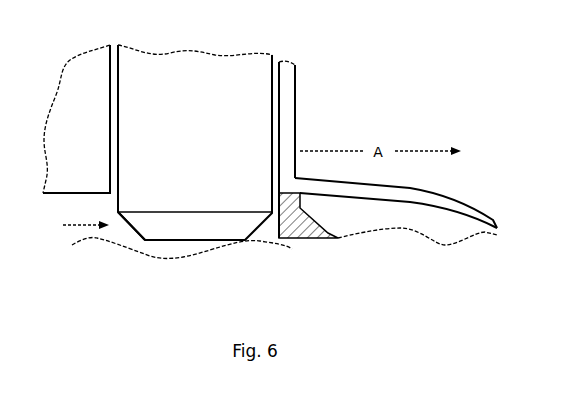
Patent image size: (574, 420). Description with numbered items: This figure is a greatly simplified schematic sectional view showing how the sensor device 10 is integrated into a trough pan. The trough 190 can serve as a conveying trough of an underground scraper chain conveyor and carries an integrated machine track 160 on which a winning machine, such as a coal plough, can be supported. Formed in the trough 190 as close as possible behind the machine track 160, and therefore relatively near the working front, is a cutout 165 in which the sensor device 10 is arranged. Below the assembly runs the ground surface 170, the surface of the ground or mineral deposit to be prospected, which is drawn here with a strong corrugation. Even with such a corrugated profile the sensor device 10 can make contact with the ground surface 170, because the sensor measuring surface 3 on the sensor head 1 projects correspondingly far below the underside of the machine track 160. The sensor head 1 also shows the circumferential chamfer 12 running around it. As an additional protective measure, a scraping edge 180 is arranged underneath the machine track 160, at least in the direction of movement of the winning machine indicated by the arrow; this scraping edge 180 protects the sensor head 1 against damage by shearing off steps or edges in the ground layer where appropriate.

The sensor head 1 is at (78, 226).
The sensor measuring surface 3 is at (207, 240).
The sensor device 10 is at (202, 82).
The circumferential chamfer 12 is at (132, 227).
The machine track 160 is at (416, 195).
The cutout 165 is at (281, 95).
The ground surface 170 is at (147, 254).
The scraping edge 180 is at (310, 240).
The trough 190 is at (87, 74).